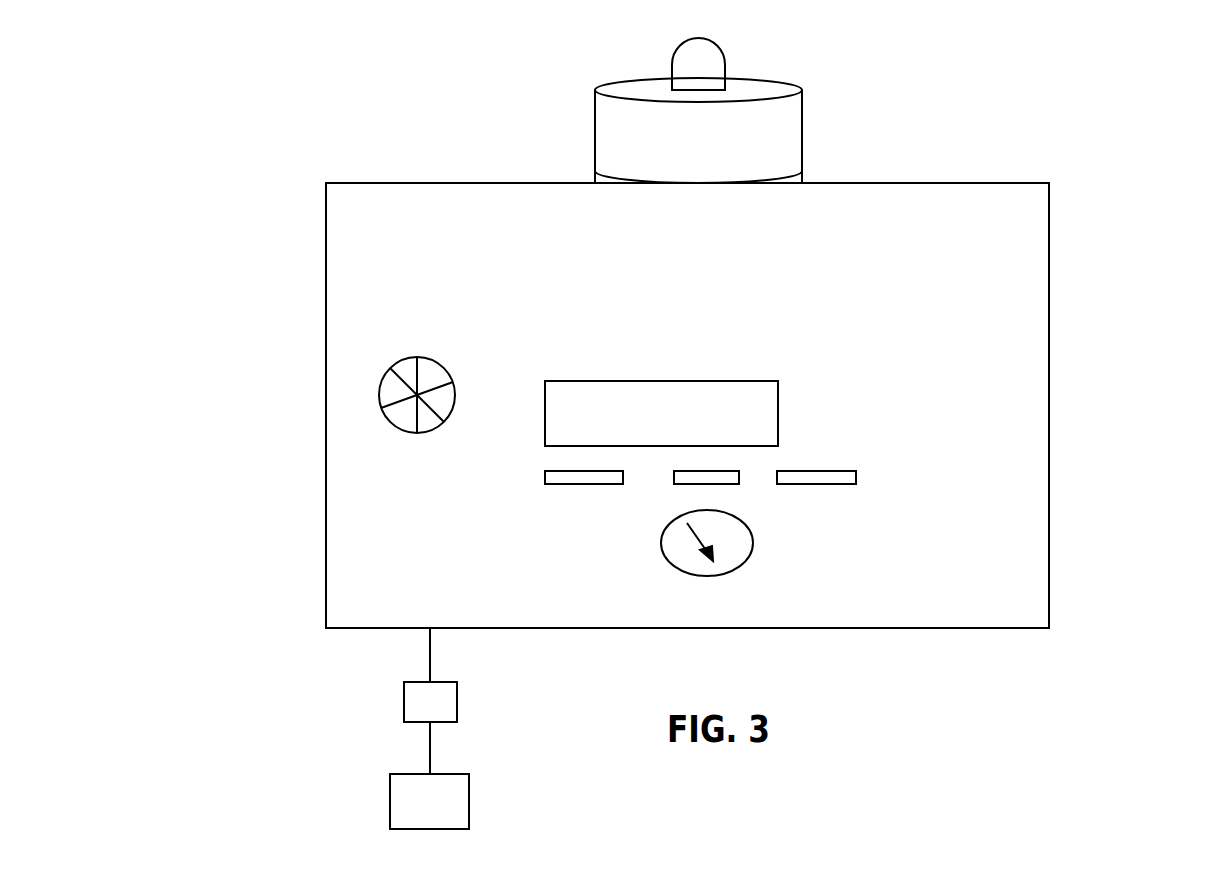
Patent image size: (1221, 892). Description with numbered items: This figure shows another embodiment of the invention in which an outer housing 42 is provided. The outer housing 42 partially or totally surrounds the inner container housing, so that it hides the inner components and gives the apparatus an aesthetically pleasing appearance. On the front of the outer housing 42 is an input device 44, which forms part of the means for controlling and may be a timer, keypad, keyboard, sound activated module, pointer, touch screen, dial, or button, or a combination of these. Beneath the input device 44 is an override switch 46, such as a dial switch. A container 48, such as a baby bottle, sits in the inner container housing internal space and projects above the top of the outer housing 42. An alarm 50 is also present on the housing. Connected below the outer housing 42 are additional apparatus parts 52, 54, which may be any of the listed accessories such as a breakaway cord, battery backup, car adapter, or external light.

The outer housing 42 is at (1049, 220).
The input device 44 is at (778, 392).
The override switch 46 is at (752, 523).
The container 48 is at (802, 112).
The alarm 50 is at (379, 392).
The apparatus part 52 is at (404, 695).
The apparatus part 54 is at (390, 802).